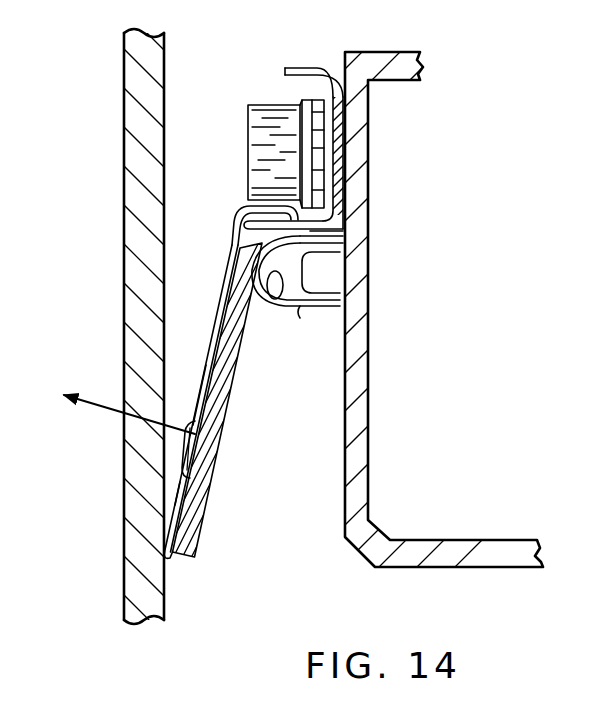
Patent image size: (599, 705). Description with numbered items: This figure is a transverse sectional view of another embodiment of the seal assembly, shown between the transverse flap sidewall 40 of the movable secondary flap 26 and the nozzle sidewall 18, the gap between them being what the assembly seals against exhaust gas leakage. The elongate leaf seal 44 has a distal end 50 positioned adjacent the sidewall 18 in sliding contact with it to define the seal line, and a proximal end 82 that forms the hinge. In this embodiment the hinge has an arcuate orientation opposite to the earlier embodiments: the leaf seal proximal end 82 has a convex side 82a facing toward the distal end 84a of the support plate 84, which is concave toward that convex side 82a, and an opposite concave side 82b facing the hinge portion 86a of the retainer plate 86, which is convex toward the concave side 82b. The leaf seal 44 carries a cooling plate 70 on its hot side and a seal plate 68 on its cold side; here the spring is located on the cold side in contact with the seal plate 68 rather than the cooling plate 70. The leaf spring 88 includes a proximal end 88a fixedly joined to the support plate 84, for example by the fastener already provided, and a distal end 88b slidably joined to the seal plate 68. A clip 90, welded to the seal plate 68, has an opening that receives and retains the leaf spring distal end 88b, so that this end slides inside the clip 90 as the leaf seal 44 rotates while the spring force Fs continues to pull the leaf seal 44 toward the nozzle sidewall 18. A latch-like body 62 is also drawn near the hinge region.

The sidewall 18 is at (164, 46).
The secondary flap 26 is at (398, 52).
The flap sidewall 40 is at (340, 64).
The support plate 84 is at (296, 62).
The support plate distal end 84a is at (268, 238).
The leaf spring 88 is at (214, 311).
The leaf spring proximal end 88a is at (250, 206).
The leaf spring distal end 88b is at (199, 400).
The leaf seal 44 is at (206, 496).
The cooling plate 70 is at (212, 450).
The clip 90 is at (184, 441).
The seal plate 68 is at (183, 497).
The distal end 50 is at (186, 535).
The latch body 62 is at (330, 268).
The retainer plate 86 is at (332, 312).
The retainer plate hinge portion 86a is at (310, 310).
The leaf seal proximal end 82 is at (336, 242).
The convex side 82a is at (340, 226).
The concave side 82b is at (288, 305).
The spring force Fs is at (90, 406).